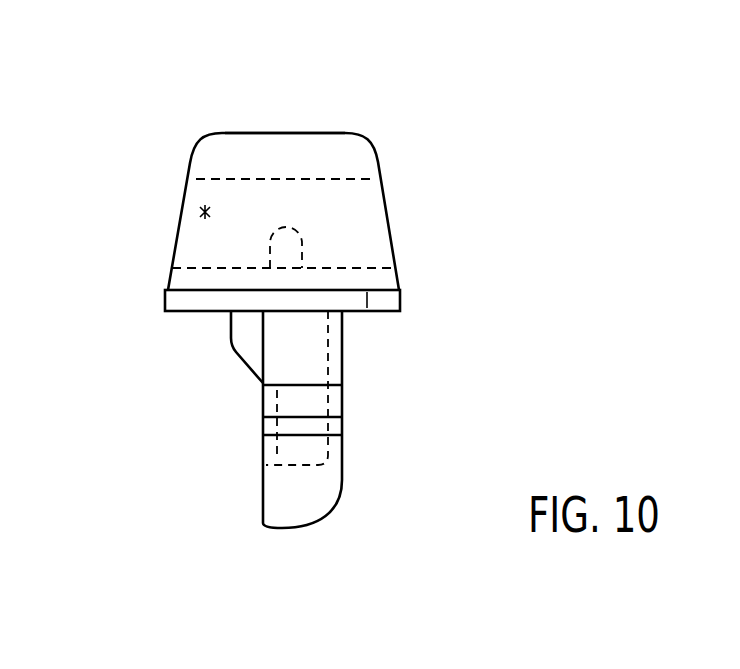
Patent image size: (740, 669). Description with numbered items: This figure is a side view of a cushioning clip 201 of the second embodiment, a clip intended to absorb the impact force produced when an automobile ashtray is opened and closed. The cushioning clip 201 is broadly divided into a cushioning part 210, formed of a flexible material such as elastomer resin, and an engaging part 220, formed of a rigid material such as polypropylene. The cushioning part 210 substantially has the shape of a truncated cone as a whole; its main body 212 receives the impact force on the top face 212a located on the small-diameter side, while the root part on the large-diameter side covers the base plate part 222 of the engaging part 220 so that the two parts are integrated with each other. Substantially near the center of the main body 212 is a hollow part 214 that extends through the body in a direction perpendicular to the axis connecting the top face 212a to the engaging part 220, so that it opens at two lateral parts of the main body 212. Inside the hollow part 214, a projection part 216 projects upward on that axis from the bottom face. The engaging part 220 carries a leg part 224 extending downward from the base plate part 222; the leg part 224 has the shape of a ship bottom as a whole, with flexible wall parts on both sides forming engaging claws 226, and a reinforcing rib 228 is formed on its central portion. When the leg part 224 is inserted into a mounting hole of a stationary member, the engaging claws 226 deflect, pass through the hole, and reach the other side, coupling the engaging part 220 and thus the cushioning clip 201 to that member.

The cushioning clip 201 is at (392, 145).
The cushioning part 210 is at (160, 165).
The main body 212 is at (367, 200).
The top face 212a is at (291, 131).
The hollow part 214 is at (198, 211).
The projection part 216 is at (303, 238).
The engaging part 220 is at (380, 427).
The base plate part 222 is at (222, 297).
The leg part 224 is at (302, 361).
The engaging claws 226 is at (291, 403).
The reinforcing rib 228 is at (252, 347).